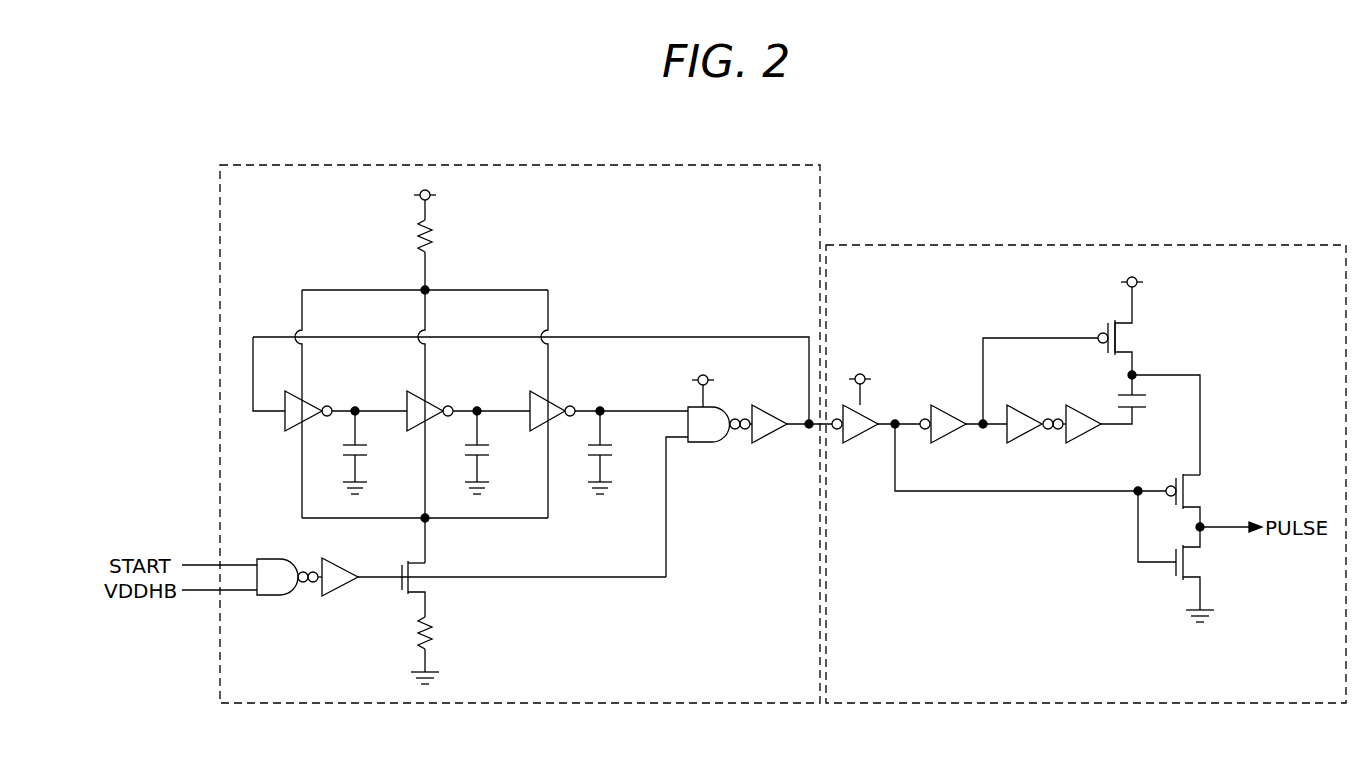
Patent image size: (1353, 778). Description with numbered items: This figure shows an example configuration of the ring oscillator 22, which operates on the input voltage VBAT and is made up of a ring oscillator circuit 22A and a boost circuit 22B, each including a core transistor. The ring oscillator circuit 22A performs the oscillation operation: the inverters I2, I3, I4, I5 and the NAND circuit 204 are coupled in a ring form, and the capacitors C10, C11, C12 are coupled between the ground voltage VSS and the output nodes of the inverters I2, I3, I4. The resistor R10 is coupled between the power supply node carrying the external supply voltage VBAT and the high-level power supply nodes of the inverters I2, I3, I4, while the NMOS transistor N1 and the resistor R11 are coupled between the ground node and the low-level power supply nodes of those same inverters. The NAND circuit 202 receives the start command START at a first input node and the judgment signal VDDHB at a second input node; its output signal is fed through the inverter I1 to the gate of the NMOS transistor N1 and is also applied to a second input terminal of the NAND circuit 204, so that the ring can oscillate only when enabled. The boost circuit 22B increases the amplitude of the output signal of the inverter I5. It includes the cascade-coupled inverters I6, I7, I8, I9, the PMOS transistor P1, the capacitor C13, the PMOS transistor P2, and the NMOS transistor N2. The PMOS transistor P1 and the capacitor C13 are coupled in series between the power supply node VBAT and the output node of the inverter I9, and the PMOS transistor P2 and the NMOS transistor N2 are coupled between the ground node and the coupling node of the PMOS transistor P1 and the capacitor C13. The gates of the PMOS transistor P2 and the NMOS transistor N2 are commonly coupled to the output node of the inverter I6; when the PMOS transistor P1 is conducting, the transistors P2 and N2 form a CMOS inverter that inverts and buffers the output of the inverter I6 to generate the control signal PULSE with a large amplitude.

The ring oscillator 22 is at (887, 144).
The ring oscillator circuit 22A is at (575, 165).
The boost circuit 22B is at (1137, 245).
The resistor R10 is at (437, 238).
The resistor R11 is at (437, 633).
The capacitor C10 is at (378, 452).
The capacitor C11 is at (499, 452).
The capacitor C12 is at (622, 452).
The capacitor C13 is at (1147, 412).
The inverter I1 is at (340, 597).
The inverter I2 is at (312, 405).
The inverter I3 is at (434, 405).
The inverter I4 is at (556, 405).
The inverter I5 is at (770, 445).
The inverter I6 is at (858, 445).
The inverter I7 is at (949, 445).
The inverter I8 is at (1026, 445).
The inverter I9 is at (1084, 445).
The NMOS transistor N1 is at (400, 566).
The NMOS transistor N2 is at (1196, 566).
The PMOS transistor P1 is at (1106, 324).
The PMOS transistor P2 is at (1196, 494).
The NAND circuit 202 is at (268, 597).
The NAND circuit 204 is at (702, 444).